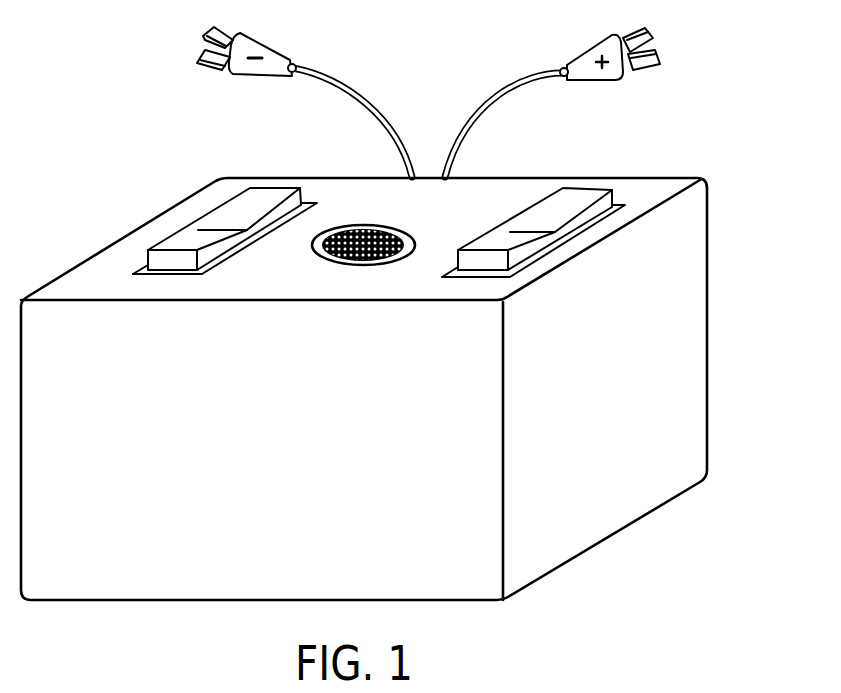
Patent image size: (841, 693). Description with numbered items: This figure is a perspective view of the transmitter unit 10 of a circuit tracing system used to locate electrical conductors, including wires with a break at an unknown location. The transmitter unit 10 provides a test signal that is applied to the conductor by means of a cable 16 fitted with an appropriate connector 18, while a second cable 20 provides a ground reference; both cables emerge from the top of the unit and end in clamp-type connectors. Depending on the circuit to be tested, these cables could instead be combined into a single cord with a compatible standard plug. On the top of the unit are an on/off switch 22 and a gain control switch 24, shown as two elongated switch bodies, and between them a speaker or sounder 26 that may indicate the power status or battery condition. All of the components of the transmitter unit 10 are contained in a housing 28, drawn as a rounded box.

The transmitter unit 10 is at (177, 173).
The cable 16 is at (497, 95).
The connector 18 is at (583, 60).
The second cable 20 is at (368, 100).
The on/off switch 22 is at (580, 197).
The gain control switch 24 is at (189, 239).
The speaker or sounder 26 is at (358, 228).
The housing 28 is at (677, 328).